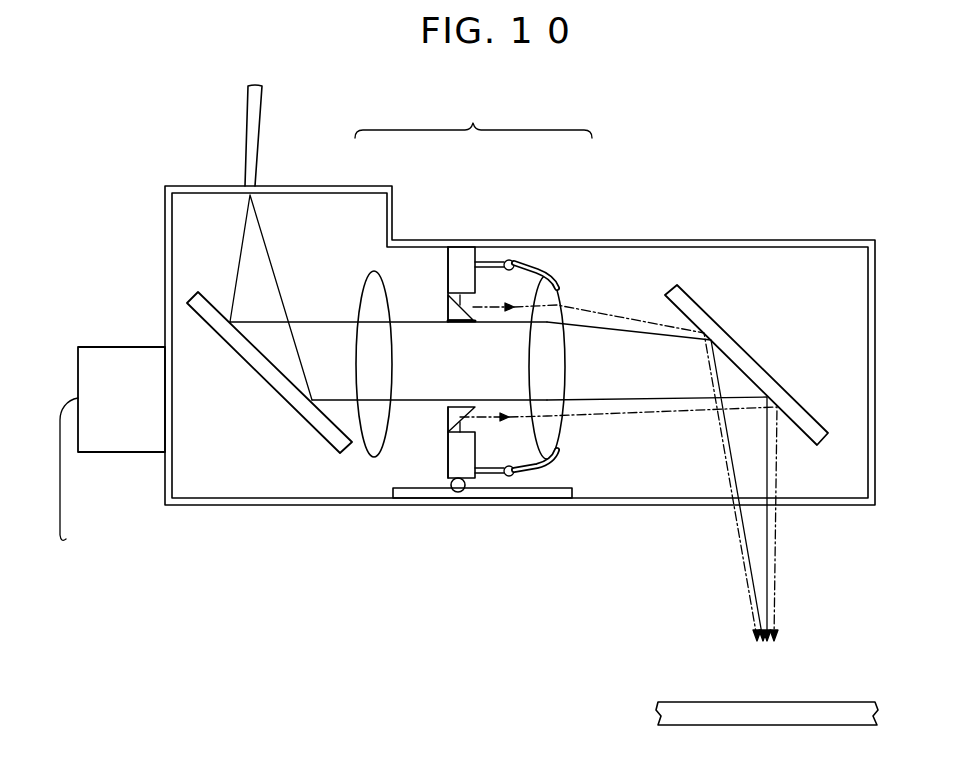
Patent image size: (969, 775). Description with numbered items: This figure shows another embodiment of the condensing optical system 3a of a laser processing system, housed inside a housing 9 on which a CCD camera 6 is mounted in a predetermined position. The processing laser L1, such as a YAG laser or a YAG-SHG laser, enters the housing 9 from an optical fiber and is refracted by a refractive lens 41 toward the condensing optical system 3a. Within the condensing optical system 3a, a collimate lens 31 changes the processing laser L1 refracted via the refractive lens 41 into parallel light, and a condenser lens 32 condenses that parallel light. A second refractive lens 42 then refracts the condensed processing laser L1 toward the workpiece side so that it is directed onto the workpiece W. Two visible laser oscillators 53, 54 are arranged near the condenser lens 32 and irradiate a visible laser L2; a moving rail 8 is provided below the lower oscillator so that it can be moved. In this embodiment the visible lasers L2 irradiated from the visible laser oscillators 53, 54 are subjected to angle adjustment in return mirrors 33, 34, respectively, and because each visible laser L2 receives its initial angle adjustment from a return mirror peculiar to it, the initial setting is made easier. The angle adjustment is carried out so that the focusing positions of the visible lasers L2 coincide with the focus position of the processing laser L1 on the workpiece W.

The condensing optical system 3a is at (473, 118).
The CCD camera 6 is at (123, 453).
The moving rail 8 is at (490, 498).
The housing 9 is at (775, 240).
The collimate lens 31 is at (372, 270).
The condenser lens 32 is at (563, 290).
The return mirror 33 is at (448, 310).
The return mirror 34 is at (448, 420).
The refractive lens 41 is at (318, 436).
The refractive lens 42 is at (676, 287).
The visible laser oscillator 53 is at (458, 256).
The visible laser oscillator 54 is at (447, 453).
The processing laser L1 is at (242, 241).
The visible laser L2 is at (640, 318).
The workpiece W is at (658, 713).